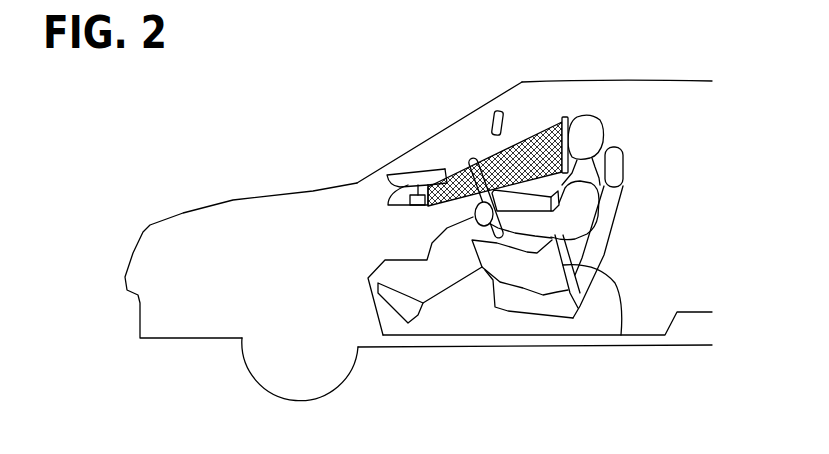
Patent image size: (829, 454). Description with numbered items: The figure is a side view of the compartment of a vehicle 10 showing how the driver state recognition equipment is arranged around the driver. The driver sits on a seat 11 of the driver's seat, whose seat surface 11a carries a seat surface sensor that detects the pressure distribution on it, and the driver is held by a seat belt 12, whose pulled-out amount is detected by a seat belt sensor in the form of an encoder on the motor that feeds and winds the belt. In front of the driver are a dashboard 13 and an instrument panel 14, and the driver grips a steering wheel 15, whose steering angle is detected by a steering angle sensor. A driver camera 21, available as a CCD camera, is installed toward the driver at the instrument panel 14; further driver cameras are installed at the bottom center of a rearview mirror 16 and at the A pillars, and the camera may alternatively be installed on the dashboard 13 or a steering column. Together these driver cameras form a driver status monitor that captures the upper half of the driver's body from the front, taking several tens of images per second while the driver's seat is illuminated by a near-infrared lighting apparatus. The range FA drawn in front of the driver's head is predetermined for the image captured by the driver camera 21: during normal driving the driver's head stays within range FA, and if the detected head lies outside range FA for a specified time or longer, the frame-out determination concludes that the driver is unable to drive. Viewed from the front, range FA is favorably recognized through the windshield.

The vehicle 10 is at (623, 80).
The seat 11 is at (621, 148).
The seat surface 11a is at (527, 313).
The seat belt 12 is at (621, 335).
The dashboard 13 is at (388, 172).
The instrument panel 14 is at (406, 183).
The steering wheel 15 is at (468, 157).
The rearview mirror 16 is at (492, 108).
The driver camera 21 is at (402, 207).
The range FA is at (566, 117).